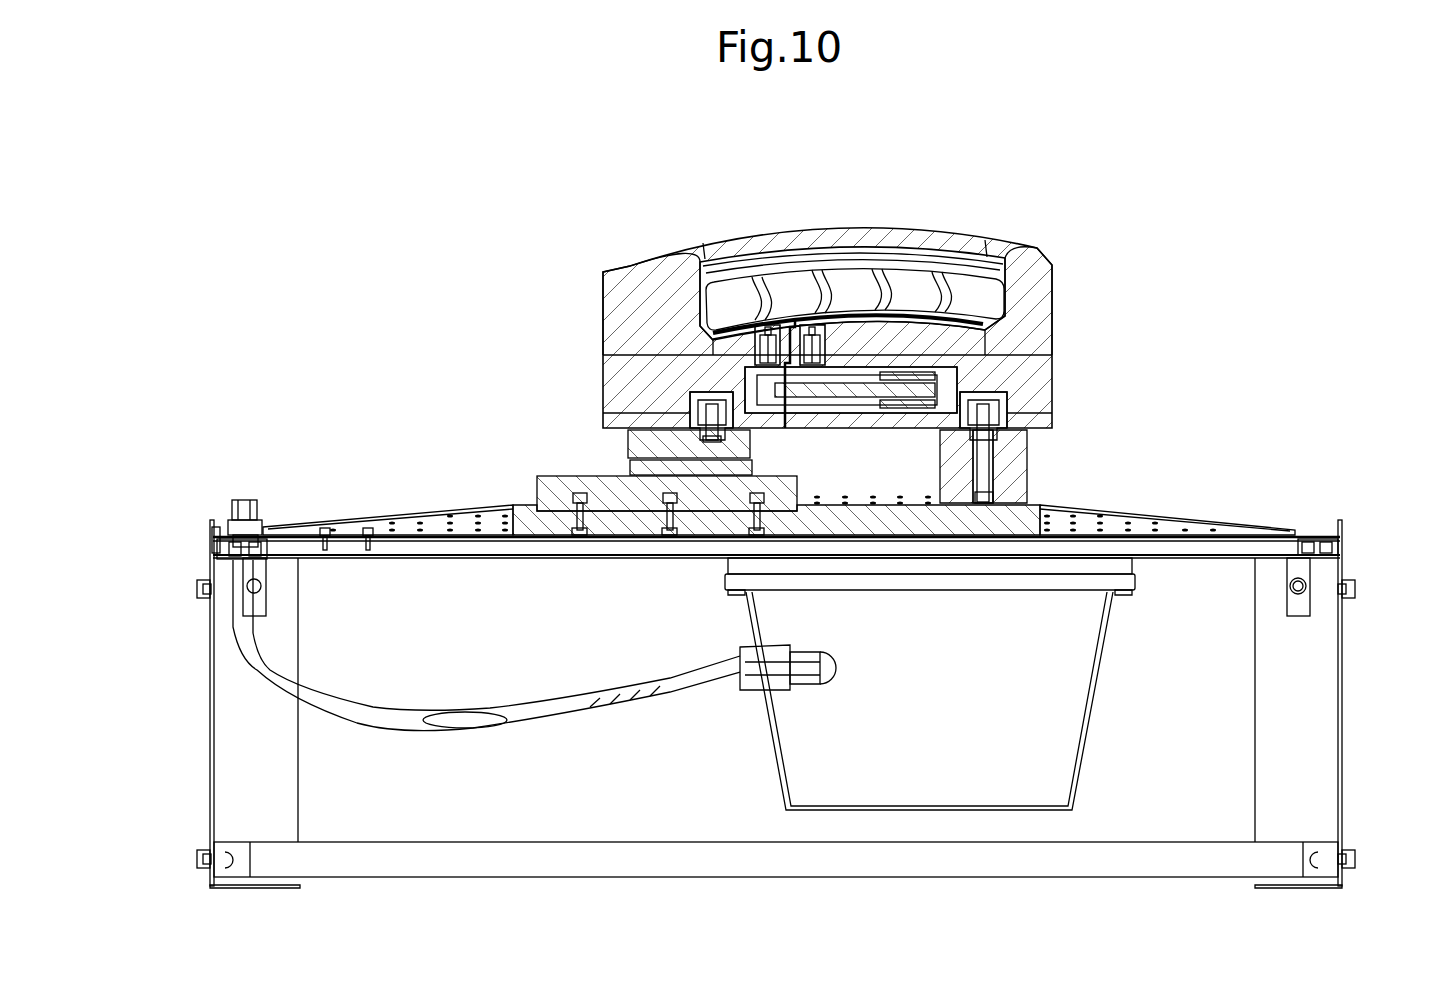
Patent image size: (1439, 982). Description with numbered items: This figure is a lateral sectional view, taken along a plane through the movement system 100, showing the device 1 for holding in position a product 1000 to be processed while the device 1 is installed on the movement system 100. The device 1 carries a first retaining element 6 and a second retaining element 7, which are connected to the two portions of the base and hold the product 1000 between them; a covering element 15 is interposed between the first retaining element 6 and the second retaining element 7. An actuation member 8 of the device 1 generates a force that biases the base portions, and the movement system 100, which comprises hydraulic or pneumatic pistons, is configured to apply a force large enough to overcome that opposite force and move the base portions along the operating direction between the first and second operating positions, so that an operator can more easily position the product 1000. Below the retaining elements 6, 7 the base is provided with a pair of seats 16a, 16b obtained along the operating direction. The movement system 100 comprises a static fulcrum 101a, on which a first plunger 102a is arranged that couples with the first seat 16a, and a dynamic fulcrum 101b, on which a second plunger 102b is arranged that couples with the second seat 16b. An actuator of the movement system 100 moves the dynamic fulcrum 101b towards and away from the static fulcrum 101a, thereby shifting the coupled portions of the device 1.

The device for holding in position a product to be processed 1 is at (600, 300).
The first retaining element 6 is at (1040, 305).
The second retaining element 7 is at (660, 283).
The actuation member 8 is at (857, 388).
The covering element 15 is at (923, 240).
The first seat 16a is at (1003, 392).
The second seat 16b is at (695, 400).
The movement system 100 is at (1300, 215).
The static fulcrum 101a is at (1030, 470).
The dynamic fulcrum 101b is at (630, 460).
The first plunger 102a is at (983, 423).
The second plunger 102b is at (705, 418).
The product 1000 is at (848, 262).